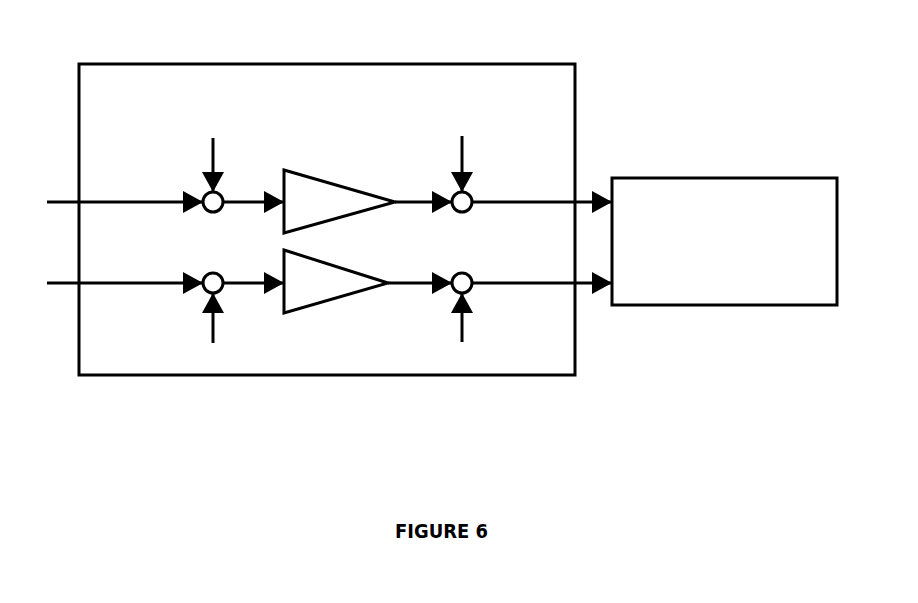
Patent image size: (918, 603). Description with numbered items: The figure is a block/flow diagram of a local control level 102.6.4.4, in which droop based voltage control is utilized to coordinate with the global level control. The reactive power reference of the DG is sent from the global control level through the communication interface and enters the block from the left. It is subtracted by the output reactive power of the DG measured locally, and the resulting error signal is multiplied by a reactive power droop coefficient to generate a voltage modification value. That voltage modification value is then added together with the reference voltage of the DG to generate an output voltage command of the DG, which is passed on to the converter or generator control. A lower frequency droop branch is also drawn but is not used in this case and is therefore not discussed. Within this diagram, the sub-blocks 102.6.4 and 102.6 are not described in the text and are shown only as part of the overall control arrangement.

The droop based local control level 102.6.4.4 is at (329, 198).
The distributed generator control loop 102.6.4 is at (442, 198).
The converter or generator control 102.6 is at (724, 241).